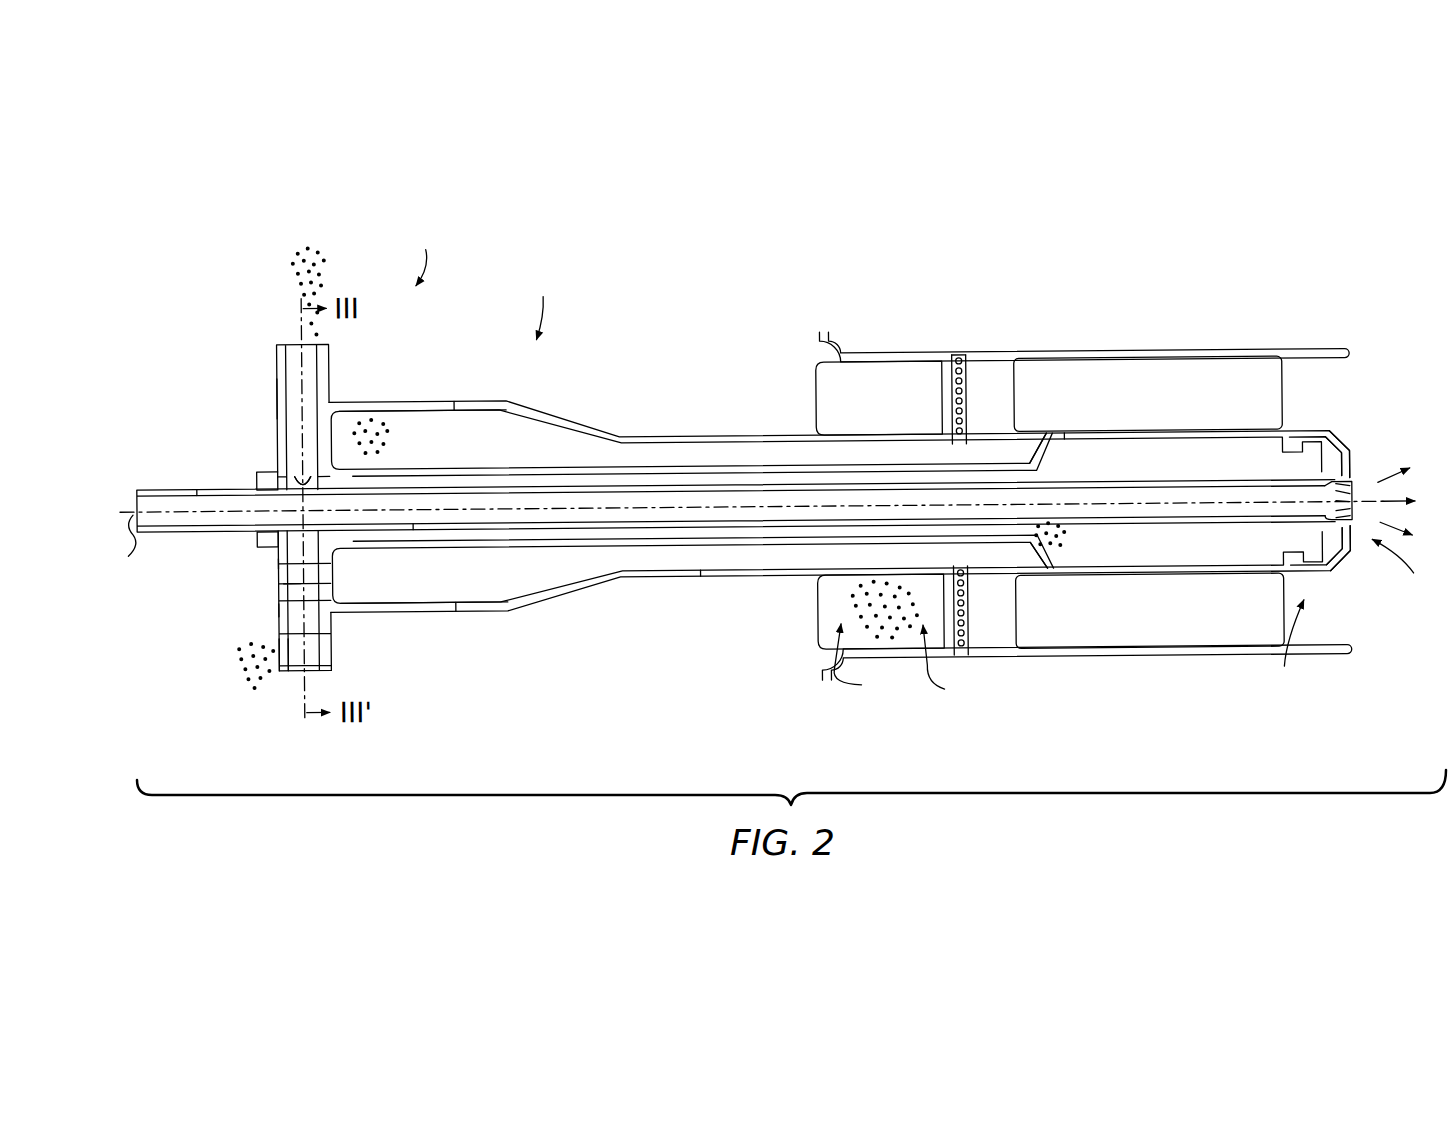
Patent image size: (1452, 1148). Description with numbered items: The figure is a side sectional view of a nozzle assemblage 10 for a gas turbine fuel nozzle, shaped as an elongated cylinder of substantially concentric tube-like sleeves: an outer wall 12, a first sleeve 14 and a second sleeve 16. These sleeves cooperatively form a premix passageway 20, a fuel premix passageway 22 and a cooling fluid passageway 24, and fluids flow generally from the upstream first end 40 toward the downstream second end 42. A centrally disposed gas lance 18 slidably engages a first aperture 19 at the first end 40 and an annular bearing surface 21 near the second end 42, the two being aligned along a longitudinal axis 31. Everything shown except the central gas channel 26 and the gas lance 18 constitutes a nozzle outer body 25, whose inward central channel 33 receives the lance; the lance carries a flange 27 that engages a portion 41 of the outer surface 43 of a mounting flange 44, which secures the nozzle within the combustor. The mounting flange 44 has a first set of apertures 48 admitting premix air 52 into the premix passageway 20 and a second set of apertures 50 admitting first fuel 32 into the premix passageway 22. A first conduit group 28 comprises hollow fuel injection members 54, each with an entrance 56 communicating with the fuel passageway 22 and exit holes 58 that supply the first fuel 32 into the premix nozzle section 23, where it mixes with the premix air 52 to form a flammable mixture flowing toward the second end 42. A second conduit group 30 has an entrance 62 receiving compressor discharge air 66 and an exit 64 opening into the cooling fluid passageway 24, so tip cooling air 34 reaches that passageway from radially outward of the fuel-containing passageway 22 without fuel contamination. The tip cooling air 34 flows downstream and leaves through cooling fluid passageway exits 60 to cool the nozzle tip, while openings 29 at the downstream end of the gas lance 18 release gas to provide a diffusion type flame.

The nozzle assemblage 10 is at (430, 251).
The outer wall 12 is at (1143, 362).
The first sleeve 14 is at (427, 404).
The second sleeve 16 is at (565, 470).
The gas lance 18 is at (185, 488).
The first aperture 19 is at (260, 546).
The premix passageway 20 is at (713, 485).
The annular bearing surface 21 is at (1330, 500).
The premix passageway 22 is at (467, 422).
The premix nozzle section 23 is at (808, 425).
The cooling fluid passageway 24 is at (1070, 476).
The nozzle outer body 25 is at (1408, 565).
The central gas channel 26 is at (197, 497).
The flange 27 is at (255, 486).
The conduit group 28 is at (984, 374).
The openings 29 is at (1378, 494).
The conduit group 30 is at (313, 372).
The longitudinal axis 31 is at (130, 550).
The first fuel 32 is at (371, 420).
The central channel 33 is at (413, 535).
The tip cooling air 34 is at (1072, 548).
The first end 40 is at (352, 662).
The portion 41 is at (280, 565).
The second end 42 is at (1288, 651).
The outer surface 43 is at (278, 612).
The mounting flange 44 is at (274, 391).
The apertures 48 is at (293, 652).
The apertures 50 is at (290, 586).
The premix air 52 is at (948, 664).
The fuel injection members 54 is at (997, 427).
The entrance 56 is at (957, 452).
The exit holes 58 is at (988, 400).
The cooling fluid passageway exits 60 is at (1323, 459).
The entrance 62 is at (295, 358).
The exit 64 is at (296, 484).
The compressor discharge air 66 is at (310, 240).